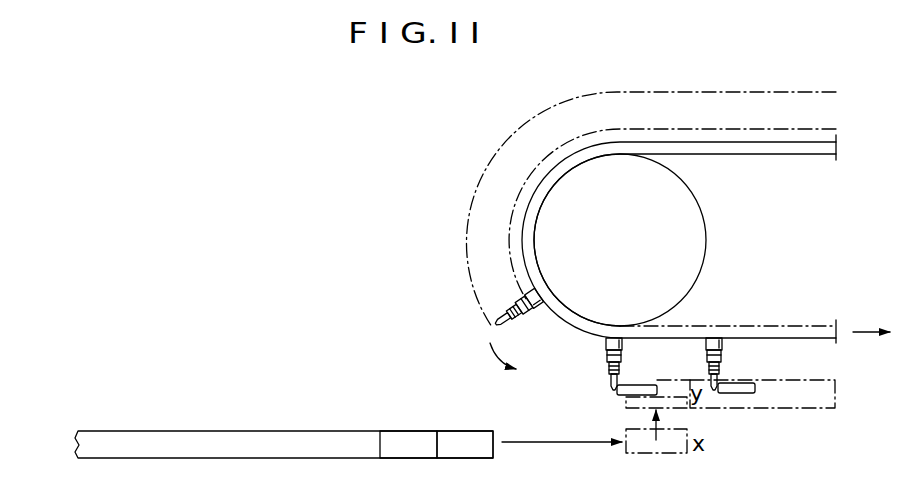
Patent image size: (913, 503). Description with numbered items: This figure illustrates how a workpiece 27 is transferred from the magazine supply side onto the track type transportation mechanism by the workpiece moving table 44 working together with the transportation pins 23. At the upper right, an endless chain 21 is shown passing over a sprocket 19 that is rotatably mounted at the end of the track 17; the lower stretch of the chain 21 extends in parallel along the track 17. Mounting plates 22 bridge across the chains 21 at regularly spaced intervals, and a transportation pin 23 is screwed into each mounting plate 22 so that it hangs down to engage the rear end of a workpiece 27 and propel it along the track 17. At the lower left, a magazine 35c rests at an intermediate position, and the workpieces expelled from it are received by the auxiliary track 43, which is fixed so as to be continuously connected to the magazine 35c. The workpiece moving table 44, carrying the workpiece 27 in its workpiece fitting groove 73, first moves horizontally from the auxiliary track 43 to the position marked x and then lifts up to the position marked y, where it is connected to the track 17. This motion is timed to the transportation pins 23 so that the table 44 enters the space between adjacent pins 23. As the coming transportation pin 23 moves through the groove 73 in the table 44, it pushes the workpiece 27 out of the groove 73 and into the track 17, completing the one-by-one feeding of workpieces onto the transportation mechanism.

The track 17 is at (788, 380).
The sprocket 19 is at (704, 224).
The endless chain 21 is at (746, 326).
The mounting plate 22 is at (606, 345).
The transportation pin 23 is at (608, 373).
The workpiece 27 is at (658, 384).
The workpiece fitting groove 73 is at (677, 396).
The magazine 35c is at (287, 431).
The auxiliary track 43 is at (405, 430).
The workpiece moving table 44 is at (463, 430).